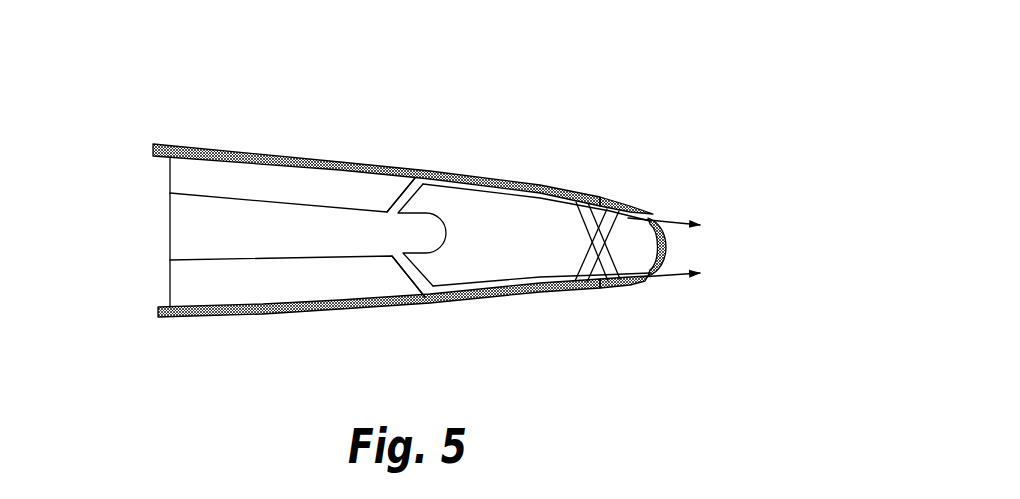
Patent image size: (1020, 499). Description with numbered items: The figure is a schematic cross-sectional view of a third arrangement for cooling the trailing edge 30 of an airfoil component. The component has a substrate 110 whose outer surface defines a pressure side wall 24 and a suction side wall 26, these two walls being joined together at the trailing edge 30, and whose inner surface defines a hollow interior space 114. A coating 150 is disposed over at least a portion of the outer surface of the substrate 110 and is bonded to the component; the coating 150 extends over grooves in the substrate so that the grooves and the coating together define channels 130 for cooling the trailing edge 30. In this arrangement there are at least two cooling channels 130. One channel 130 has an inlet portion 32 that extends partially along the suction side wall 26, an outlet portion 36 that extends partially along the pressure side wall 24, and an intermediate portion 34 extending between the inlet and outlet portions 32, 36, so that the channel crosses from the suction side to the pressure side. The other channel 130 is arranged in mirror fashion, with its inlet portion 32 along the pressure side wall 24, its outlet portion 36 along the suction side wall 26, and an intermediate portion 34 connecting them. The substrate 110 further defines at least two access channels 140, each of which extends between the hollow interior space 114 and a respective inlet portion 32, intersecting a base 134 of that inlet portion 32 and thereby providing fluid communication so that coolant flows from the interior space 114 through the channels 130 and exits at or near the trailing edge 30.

The pressure side wall 24 is at (376, 135).
The suction side wall 26 is at (379, 345).
The trailing edge 30 is at (693, 248).
The inlet portion 32 is at (521, 285).
The intermediate portion 34 is at (583, 226).
The outlet portion 36 is at (625, 204).
The substrate 110 is at (524, 258).
The hollow interior space 114 is at (187, 235).
The cooling channel 130 is at (630, 216).
The base of the inlet portion 134 is at (472, 285).
The access channel 140 is at (417, 273).
The coating 150 is at (213, 148).